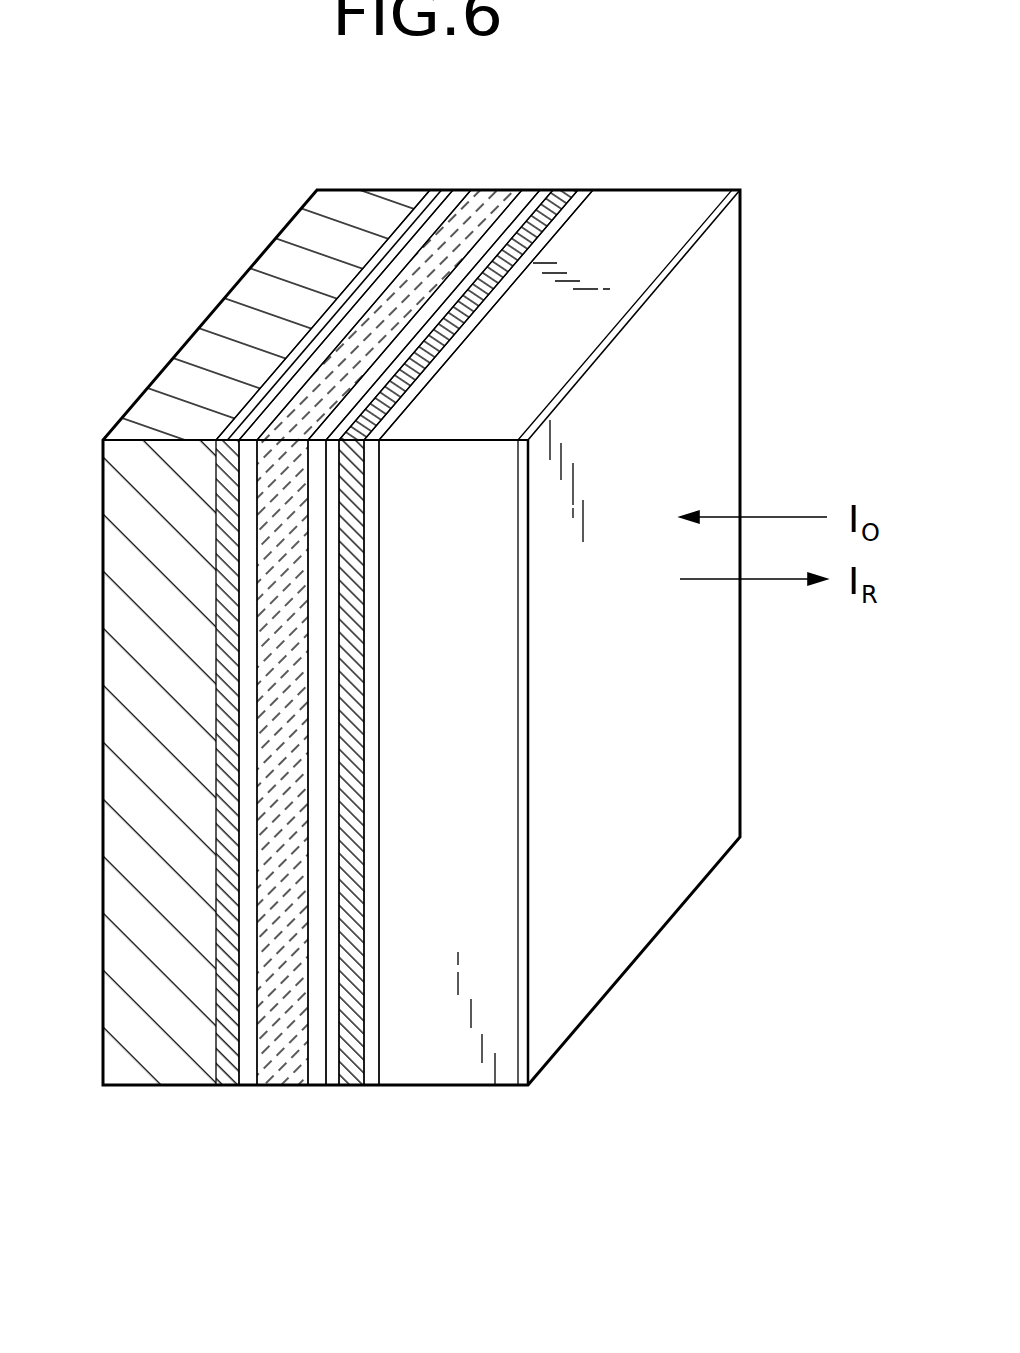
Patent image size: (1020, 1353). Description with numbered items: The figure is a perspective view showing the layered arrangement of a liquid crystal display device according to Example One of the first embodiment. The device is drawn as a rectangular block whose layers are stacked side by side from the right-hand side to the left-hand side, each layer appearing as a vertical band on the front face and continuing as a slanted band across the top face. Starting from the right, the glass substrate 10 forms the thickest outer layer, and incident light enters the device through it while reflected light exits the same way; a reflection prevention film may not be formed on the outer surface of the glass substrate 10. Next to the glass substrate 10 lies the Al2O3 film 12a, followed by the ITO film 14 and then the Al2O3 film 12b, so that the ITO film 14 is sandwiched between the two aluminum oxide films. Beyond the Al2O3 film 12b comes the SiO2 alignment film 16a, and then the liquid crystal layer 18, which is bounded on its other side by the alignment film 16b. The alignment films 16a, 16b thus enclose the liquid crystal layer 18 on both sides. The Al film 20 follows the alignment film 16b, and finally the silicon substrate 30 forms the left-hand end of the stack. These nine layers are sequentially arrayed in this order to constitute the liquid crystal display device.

The glass substrate 10 is at (463, 1078).
The Al2O3 film 12a is at (370, 1080).
The Al2O3 film 12b is at (328, 1080).
The ITO film 14 is at (352, 1080).
The SiO2 alignment film 16a is at (315, 1080).
The alignment film 16b is at (247, 1080).
The liquid crystal layer 18 is at (272, 1078).
The Al film 20 is at (225, 1080).
The silicon substrate 30 is at (140, 1077).